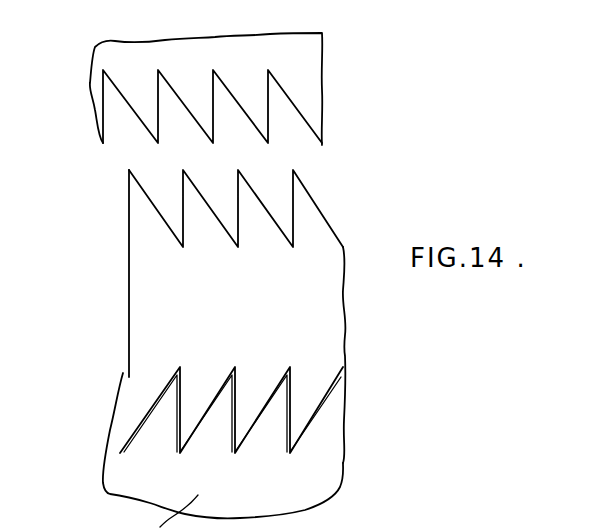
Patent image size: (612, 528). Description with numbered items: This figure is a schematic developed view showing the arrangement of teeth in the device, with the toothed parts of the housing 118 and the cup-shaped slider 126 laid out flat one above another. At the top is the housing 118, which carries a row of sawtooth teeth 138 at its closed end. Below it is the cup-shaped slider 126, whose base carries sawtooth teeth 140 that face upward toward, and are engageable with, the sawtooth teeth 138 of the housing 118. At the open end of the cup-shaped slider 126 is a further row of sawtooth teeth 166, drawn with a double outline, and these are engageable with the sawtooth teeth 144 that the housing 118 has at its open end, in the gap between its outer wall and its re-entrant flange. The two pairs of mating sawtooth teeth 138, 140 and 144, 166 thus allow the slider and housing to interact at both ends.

The housing 118 is at (180, 52).
The sawtooth teeth 138 is at (313, 122).
The cup-shaped slider 126 is at (140, 295).
The sawtooth teeth 140 is at (305, 212).
The sawtooth teeth 166 is at (307, 398).
The sawtooth teeth 144 is at (327, 415).